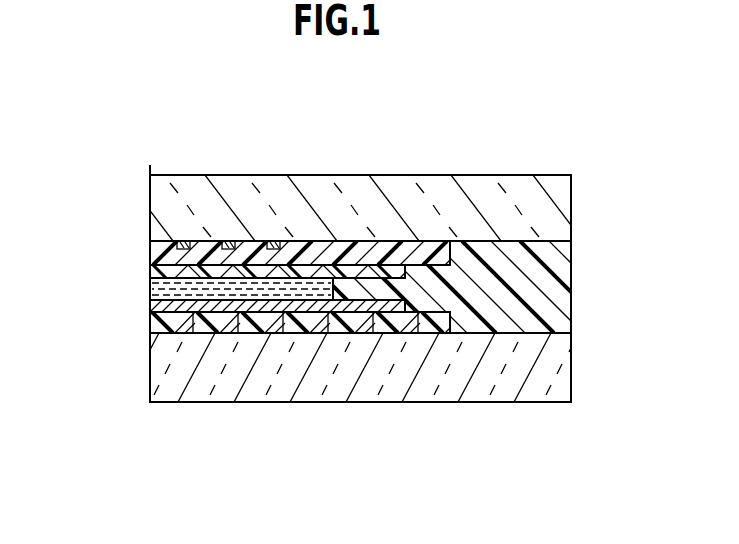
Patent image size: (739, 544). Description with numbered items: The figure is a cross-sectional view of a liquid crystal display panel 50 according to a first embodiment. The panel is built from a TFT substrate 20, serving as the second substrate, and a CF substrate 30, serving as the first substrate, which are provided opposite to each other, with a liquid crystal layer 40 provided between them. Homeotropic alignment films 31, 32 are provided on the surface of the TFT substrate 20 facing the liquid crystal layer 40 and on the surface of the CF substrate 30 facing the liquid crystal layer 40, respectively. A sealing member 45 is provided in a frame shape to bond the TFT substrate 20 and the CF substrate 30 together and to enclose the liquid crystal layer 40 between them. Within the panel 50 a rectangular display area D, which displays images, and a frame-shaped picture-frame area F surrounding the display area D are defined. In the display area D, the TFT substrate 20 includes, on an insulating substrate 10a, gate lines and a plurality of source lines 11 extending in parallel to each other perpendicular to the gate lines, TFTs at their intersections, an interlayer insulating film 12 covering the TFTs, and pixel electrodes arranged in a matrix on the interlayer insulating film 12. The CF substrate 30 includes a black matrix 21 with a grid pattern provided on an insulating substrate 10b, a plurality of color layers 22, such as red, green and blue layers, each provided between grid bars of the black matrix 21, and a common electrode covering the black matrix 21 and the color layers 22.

The liquid crystal display panel 50 is at (104, 176).
The insulating substrate 10a is at (560, 200).
The insulating substrate 10b is at (562, 353).
The source lines 11 is at (184, 244).
The interlayer insulating film 12 is at (363, 252).
The TFT substrate 20 is at (146, 176).
The black matrix 21 is at (445, 325).
The color layers 22 is at (250, 300).
The CF substrate 30 is at (146, 309).
The homeotropic alignment film 31 is at (404, 272).
The homeotropic alignment film 32 is at (412, 306).
The liquid crystal layer 40 is at (150, 289).
The sealing member 45 is at (562, 272).
The display area D is at (150, 407).
The picture-frame area F is at (570, 407).